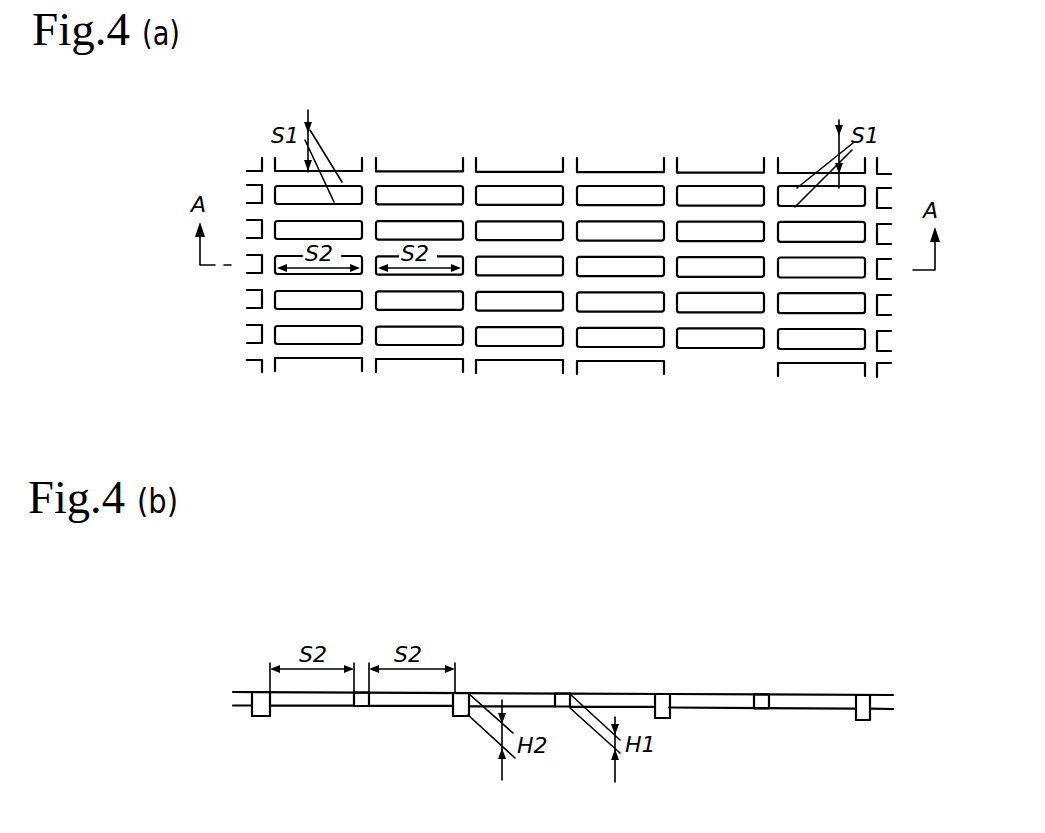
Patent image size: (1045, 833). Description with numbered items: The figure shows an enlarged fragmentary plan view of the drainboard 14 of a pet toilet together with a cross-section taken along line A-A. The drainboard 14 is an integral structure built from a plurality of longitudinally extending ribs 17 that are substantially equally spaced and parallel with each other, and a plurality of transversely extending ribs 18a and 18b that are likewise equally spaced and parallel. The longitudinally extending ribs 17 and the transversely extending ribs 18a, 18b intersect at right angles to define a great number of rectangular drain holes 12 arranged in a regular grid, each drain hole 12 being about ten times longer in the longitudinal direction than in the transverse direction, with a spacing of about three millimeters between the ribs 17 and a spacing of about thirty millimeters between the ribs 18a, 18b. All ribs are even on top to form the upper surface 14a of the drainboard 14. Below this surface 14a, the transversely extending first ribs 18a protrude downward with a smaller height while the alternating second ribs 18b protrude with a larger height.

In FIG. 4A, the drain hole 12 is at (697, 268).
In FIG. 4A, the drainboard 14 is at (713, 177).
In FIG. 4B, the drainboard 14 is at (520, 695).
In FIG. 4A, the upper surface of the drainboard 14a is at (493, 212).
In FIG. 4B, the upper surface of the drainboard 14a is at (622, 692).
In FIG. 4A, the longitudinally extending rib 17 is at (442, 243).
In FIG. 4B, the longitudinally extending rib 17 is at (802, 703).
In FIG. 4A, the transversely extending, first rib 18a is at (371, 301).
In FIG. 4B, the transversely extending, first rib 18a is at (362, 706).
In FIG. 4A, the transversely extending, second rib 18b is at (264, 333).
In FIG. 4B, the transversely extending, second rib 18b is at (261, 716).